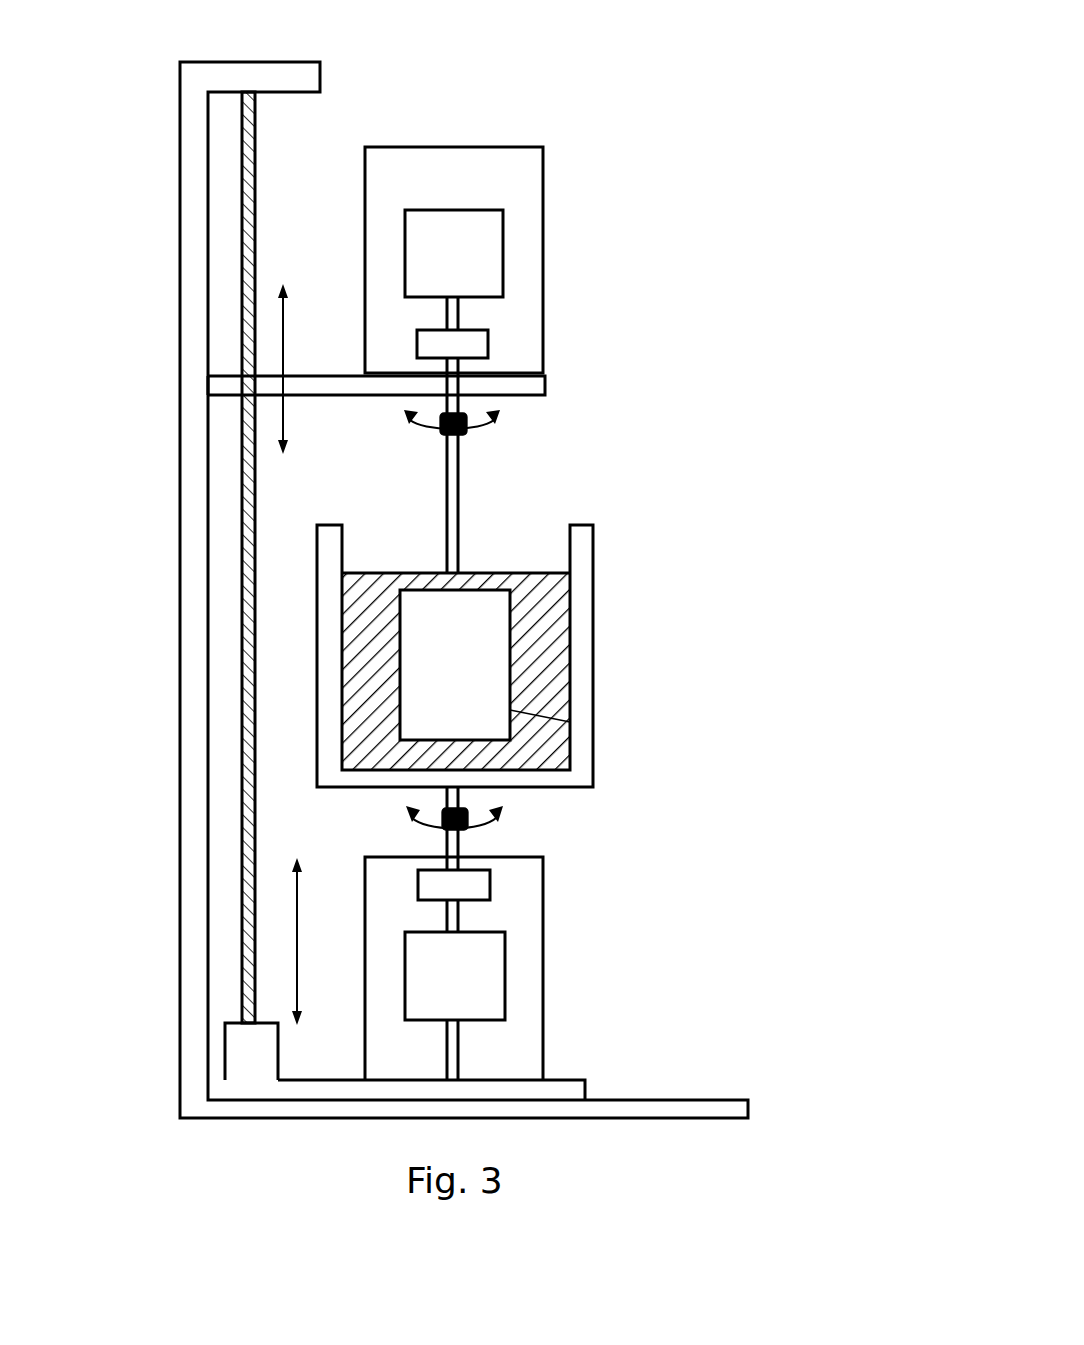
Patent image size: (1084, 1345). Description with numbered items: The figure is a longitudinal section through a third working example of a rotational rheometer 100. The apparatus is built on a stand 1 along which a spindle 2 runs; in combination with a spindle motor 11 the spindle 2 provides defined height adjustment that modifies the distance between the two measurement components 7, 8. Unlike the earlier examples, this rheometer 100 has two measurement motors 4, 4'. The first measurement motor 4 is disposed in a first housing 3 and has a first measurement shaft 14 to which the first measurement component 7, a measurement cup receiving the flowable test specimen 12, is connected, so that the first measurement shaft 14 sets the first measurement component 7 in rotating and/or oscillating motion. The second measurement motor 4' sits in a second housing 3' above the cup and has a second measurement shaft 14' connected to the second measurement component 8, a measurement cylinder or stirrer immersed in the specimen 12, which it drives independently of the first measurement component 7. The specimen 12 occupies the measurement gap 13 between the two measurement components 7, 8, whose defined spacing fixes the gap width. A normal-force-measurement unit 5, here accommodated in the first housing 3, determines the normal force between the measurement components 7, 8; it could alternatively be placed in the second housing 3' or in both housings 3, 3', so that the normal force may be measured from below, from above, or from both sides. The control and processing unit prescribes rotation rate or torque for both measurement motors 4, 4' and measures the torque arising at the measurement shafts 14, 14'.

The rheometer 100 is at (702, 96).
The stand 1 is at (190, 1100).
The spindle 2 is at (255, 192).
The first housing 3 is at (524, 968).
The second housing 3' is at (525, 260).
The first measurement motor 4 is at (582, 975).
The second measurement motor 4' is at (578, 250).
The normal-force-measurement unit 5 is at (468, 888).
The first measurement component 7 is at (593, 675).
The second measurement component 8 is at (470, 703).
The spindle motor 11 is at (240, 1070).
The test specimen 12 is at (522, 602).
The measurement gap 13 is at (515, 713).
The first measurement shaft 14 is at (371, 921).
The second measurement shaft 14' is at (362, 395).